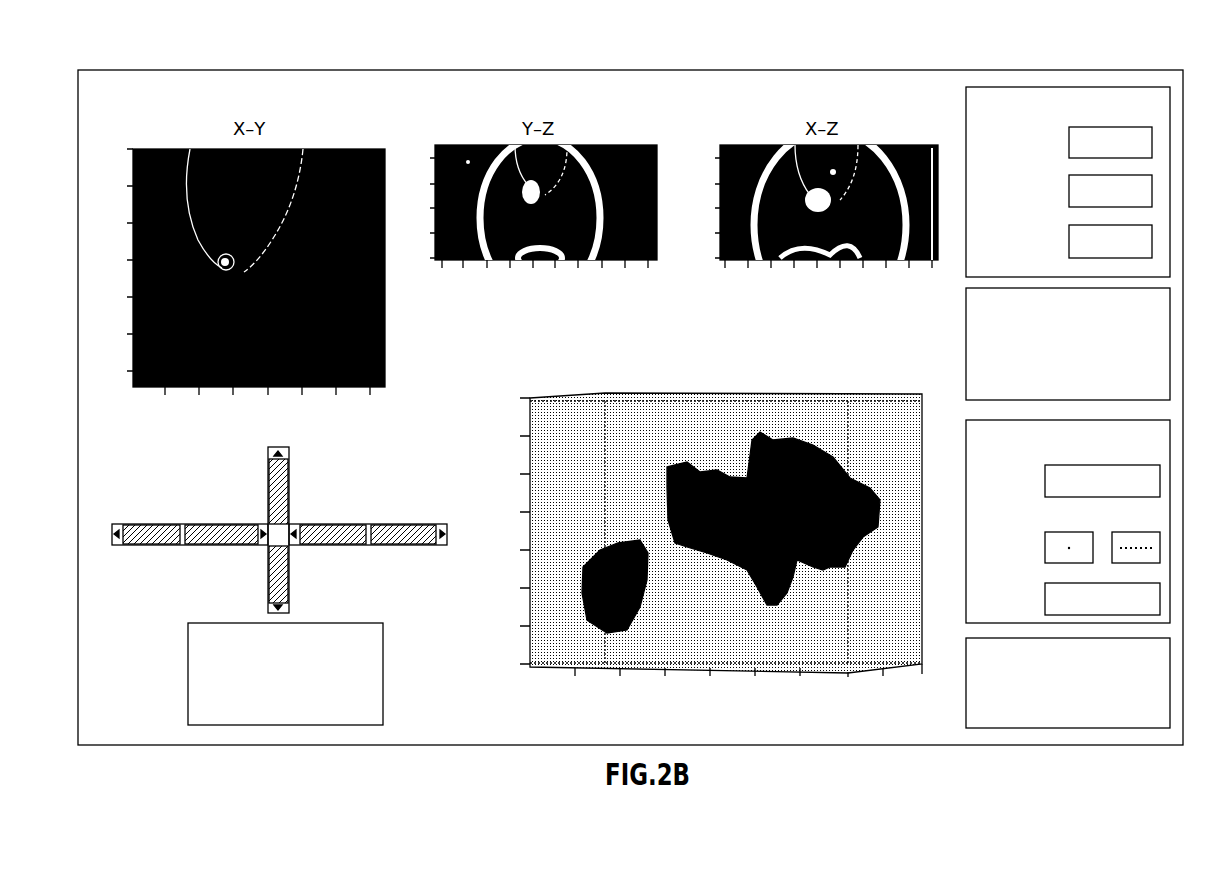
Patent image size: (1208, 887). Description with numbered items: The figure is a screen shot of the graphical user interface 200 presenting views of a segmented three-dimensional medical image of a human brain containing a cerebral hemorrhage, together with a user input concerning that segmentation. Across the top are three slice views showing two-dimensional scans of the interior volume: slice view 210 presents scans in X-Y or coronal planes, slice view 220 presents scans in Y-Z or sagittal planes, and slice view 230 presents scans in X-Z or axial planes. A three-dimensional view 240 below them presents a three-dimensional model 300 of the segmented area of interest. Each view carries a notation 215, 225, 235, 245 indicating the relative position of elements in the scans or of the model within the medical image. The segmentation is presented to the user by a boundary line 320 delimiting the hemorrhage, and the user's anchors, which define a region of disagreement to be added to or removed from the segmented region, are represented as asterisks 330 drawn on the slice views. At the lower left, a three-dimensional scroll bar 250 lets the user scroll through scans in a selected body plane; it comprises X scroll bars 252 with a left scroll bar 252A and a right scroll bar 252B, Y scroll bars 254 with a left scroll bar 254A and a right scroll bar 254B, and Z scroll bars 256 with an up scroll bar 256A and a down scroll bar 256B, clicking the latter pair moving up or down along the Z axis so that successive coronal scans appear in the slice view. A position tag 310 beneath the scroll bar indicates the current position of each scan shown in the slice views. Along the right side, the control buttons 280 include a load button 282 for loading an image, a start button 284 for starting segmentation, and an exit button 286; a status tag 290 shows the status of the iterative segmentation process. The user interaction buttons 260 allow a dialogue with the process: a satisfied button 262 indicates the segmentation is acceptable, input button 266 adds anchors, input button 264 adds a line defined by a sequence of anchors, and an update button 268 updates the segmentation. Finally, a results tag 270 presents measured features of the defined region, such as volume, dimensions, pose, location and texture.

The graphical user interface 200 is at (1108, 49).
The slice view 210 is at (330, 149).
The notation 215 is at (148, 405).
The slice view 220 is at (445, 145).
The notation 225 is at (418, 277).
The slice view 230 is at (730, 145).
The notation 235 is at (706, 277).
The 3D view 240 is at (700, 395).
The notation 245 is at (512, 688).
The 3D scroll bar 250 is at (277, 505).
The X scroll bars 252 is at (176, 505).
The left scroll bar 252A is at (158, 523).
The right scroll bar 252B is at (221, 506).
The Y scroll bars 254 is at (371, 543).
The left scroll bar 254A is at (315, 522).
The right scroll bar 254B is at (387, 523).
The Z scroll bars 256 is at (285, 523).
The up scroll bar 256A is at (268, 472).
The down scroll bar 256B is at (268, 558).
The user interaction buttons 260 is at (1048, 521).
The satisfied button 262 is at (1045, 480).
The input button 264 is at (1148, 532).
The input button 266 is at (1078, 532).
The update button 268 is at (1045, 600).
The results tag 270 is at (966, 660).
The control buttons 280 is at (1030, 182).
The load button 282 is at (1069, 142).
The start button 284 is at (1069, 190).
The exit button 286 is at (1069, 240).
The status tag 290 is at (966, 345).
The 3D model 300 is at (837, 450).
The position tag 310 is at (188, 655).
The boundary line 320 is at (303, 149).
The asterisks 330 is at (190, 149).